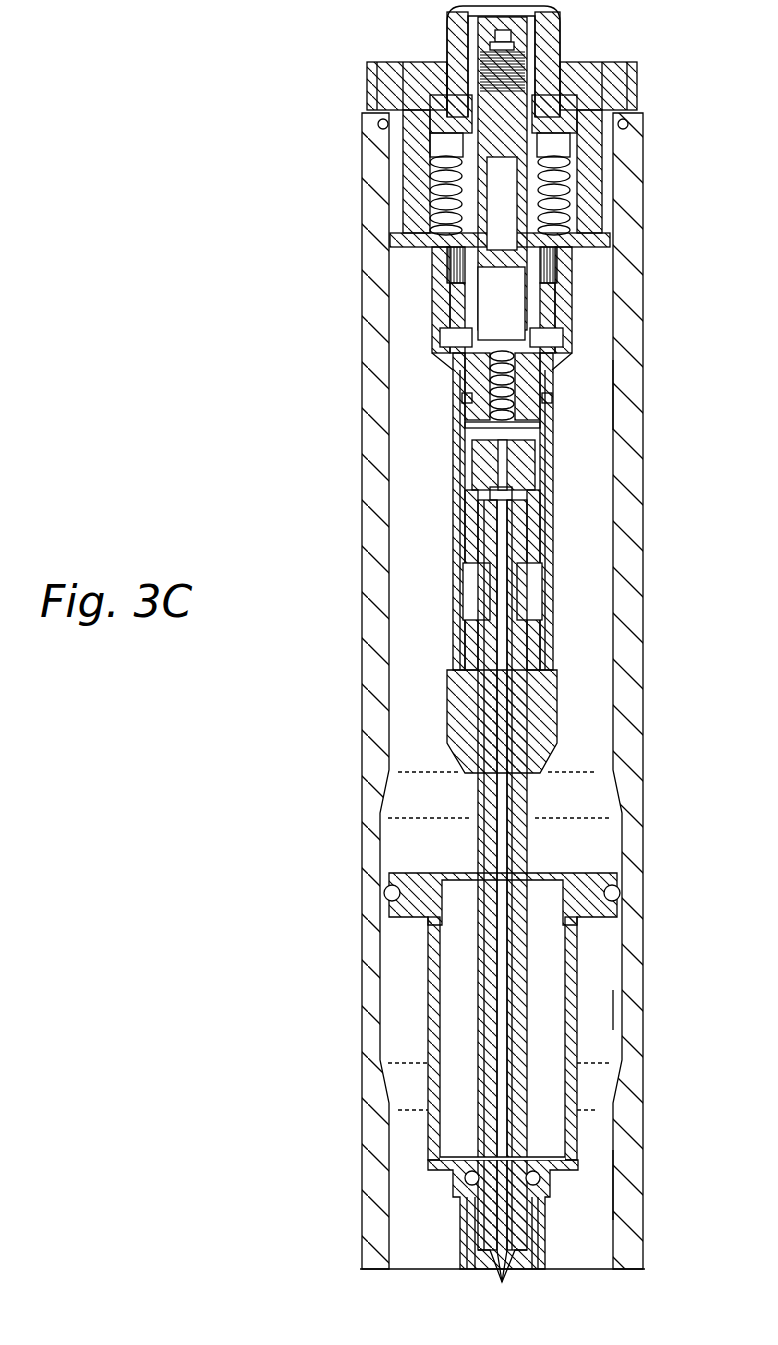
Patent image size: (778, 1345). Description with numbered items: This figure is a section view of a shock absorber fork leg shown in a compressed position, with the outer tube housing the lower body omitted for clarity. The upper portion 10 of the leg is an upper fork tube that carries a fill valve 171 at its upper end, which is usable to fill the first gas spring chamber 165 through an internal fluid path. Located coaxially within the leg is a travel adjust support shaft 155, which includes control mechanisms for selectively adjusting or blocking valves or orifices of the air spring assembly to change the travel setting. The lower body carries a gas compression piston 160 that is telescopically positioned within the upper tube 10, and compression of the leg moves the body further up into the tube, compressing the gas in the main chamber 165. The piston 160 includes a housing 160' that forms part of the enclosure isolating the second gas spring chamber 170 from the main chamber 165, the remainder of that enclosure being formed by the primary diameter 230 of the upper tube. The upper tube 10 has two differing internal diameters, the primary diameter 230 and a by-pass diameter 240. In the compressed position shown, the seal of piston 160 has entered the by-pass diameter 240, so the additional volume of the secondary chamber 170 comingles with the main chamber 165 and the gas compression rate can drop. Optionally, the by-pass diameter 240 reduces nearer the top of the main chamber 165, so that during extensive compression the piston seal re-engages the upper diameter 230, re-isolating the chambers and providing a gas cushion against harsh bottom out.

The upper portion of the shock absorber 10 is at (643, 570).
The fill valve 171 is at (510, 44).
The primary diameter 230 is at (613, 413).
The first gas spring chamber 165 is at (437, 486).
The travel adjust support shaft 155 is at (527, 855).
The gas compression piston 160 is at (551, 896).
The housing 160' is at (576, 1038).
The by-pass diameter 240 is at (613, 1026).
The second gas spring chamber 170 is at (405, 992).